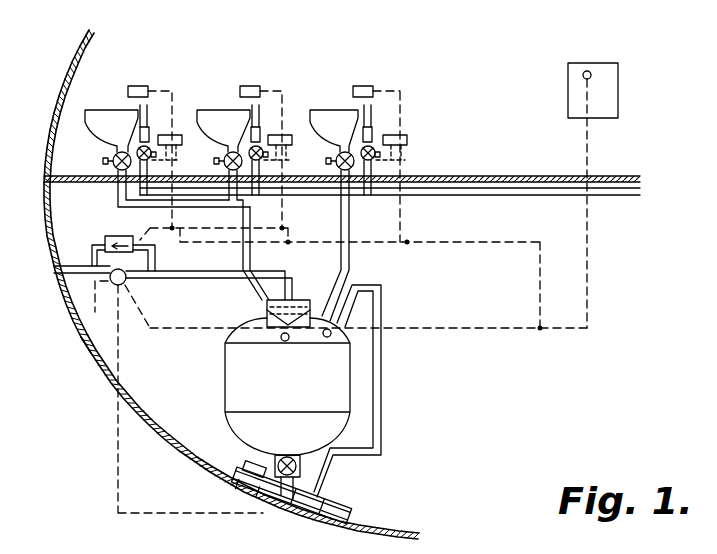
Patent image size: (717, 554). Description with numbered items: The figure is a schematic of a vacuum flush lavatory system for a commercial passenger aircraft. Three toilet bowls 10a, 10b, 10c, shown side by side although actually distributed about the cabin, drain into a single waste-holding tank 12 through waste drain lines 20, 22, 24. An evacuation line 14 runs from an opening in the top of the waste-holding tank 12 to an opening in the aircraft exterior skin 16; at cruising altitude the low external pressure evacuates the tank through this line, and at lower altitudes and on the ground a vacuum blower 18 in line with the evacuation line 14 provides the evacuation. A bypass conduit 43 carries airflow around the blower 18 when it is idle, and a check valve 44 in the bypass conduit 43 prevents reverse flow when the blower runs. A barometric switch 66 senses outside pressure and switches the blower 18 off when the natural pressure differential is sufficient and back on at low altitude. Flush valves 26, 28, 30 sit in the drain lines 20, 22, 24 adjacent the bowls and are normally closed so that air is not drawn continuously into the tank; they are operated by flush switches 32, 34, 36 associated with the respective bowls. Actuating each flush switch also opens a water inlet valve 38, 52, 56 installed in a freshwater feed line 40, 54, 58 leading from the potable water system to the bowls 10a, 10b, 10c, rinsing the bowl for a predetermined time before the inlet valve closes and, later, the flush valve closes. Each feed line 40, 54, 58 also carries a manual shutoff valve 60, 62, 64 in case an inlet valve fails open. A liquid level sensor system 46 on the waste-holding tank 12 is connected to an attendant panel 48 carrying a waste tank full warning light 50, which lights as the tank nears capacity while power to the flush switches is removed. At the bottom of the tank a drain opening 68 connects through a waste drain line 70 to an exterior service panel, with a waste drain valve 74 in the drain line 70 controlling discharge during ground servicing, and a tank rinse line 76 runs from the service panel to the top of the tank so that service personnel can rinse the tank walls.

The toilet bowl 10a is at (100, 112).
The toilet bowl 10b is at (213, 112).
The toilet bowl 10c is at (332, 112).
The waste-holding tank 12 is at (228, 372).
The evacuation line 14 is at (198, 279).
The aircraft exterior skin 16 is at (58, 292).
The vacuum blower 18 is at (113, 297).
The waste drain line 20 is at (115, 197).
The waste drain line 22 is at (238, 188).
The waste drain line 24 is at (351, 212).
The flush valve 26 is at (108, 161).
The flush valve 28 is at (224, 158).
The flush valve 30 is at (336, 160).
The flush switch 32 is at (136, 86).
The flush switch 34 is at (247, 86).
The flush switch 36 is at (362, 86).
The water inlet valve 38 is at (150, 127).
The freshwater feed line 40 is at (214, 163).
The bypass conduit 43 is at (156, 262).
The check valve 44 is at (104, 242).
The liquid level sensor system 46 is at (325, 337).
The attendant panel 48 is at (622, 98).
The waste tank full warning light 50 is at (589, 70).
The water inlet valve 52 is at (258, 125).
The freshwater feed line 54 is at (330, 163).
The water inlet valve 56 is at (372, 125).
The freshwater feed line 58 is at (402, 167).
The manual shutoff valve 60 is at (137, 152).
The manual shutoff valve 62 is at (270, 137).
The manual shutoff valve 64 is at (405, 137).
The barometric switch 66 is at (86, 341).
The drain opening 68 is at (286, 455).
The waste drain line 70 is at (312, 491).
The waste drain valve 74 is at (272, 460).
The tank rinse line 76 is at (382, 398).